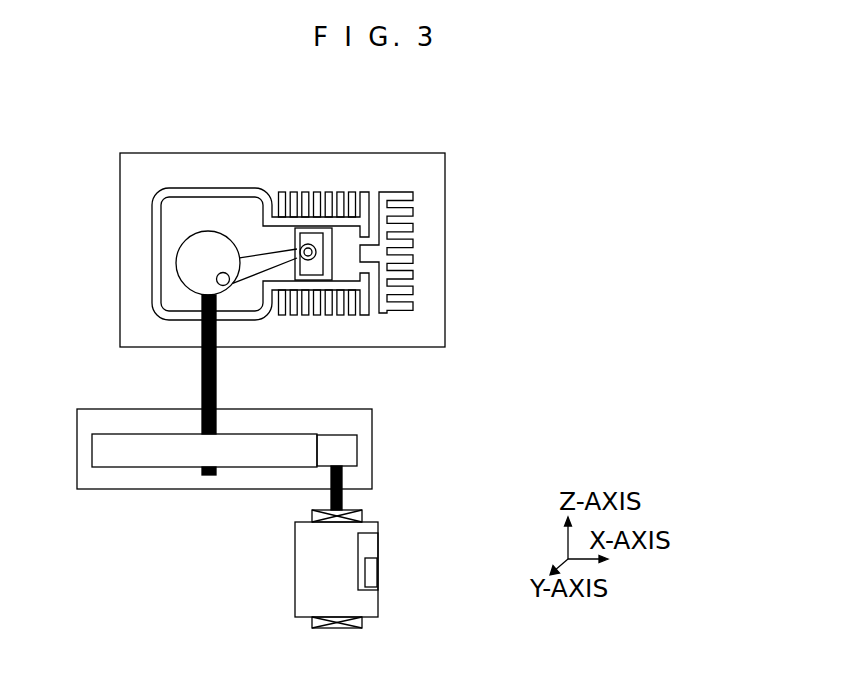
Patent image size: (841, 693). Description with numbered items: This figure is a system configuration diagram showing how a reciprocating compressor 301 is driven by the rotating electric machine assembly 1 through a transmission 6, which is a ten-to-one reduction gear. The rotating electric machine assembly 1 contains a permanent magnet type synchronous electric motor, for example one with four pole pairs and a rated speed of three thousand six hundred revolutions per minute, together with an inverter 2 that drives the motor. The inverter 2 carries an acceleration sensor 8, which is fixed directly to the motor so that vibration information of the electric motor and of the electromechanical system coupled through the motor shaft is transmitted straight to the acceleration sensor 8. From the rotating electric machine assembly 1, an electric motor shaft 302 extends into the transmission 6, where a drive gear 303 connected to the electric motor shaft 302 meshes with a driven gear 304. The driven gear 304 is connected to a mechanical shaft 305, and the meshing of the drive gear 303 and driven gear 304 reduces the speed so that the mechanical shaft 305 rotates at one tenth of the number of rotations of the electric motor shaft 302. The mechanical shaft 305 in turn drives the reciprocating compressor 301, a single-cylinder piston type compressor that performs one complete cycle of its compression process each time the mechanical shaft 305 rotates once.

The reciprocating compressor 301 is at (441, 252).
The mechanical shaft 305 is at (200, 390).
The transmission 6 is at (223, 490).
The driven gear 304 is at (148, 468).
The drive gear 303 is at (353, 448).
The electric motor shaft 302 is at (377, 513).
The rotating electric machine assembly 1 is at (295, 590).
The inverter 2 is at (370, 545).
The acceleration sensor 8 is at (372, 573).